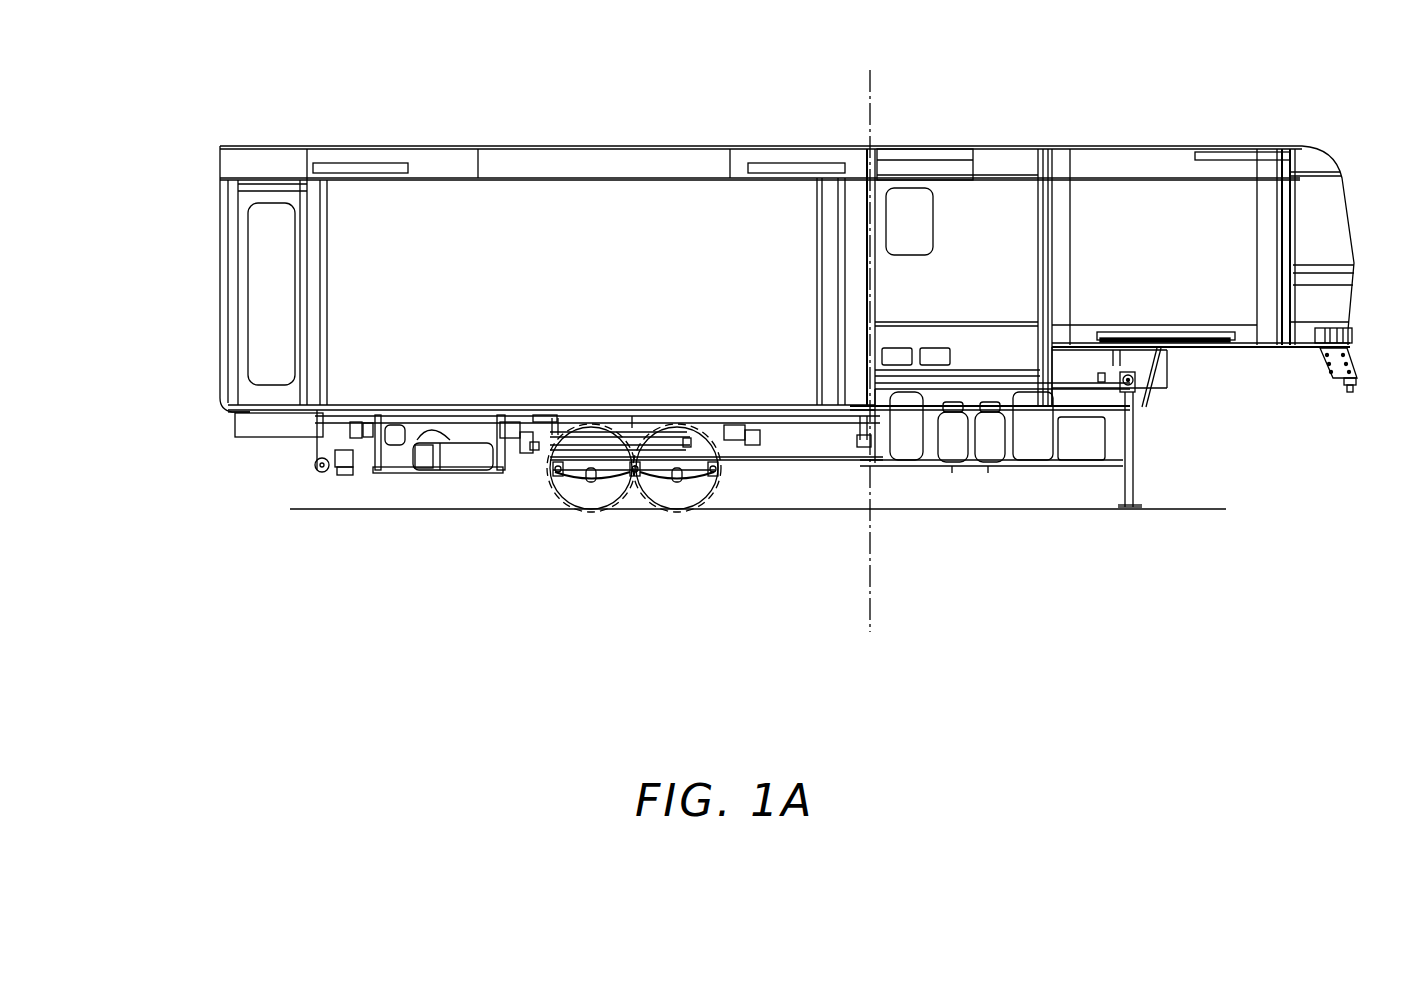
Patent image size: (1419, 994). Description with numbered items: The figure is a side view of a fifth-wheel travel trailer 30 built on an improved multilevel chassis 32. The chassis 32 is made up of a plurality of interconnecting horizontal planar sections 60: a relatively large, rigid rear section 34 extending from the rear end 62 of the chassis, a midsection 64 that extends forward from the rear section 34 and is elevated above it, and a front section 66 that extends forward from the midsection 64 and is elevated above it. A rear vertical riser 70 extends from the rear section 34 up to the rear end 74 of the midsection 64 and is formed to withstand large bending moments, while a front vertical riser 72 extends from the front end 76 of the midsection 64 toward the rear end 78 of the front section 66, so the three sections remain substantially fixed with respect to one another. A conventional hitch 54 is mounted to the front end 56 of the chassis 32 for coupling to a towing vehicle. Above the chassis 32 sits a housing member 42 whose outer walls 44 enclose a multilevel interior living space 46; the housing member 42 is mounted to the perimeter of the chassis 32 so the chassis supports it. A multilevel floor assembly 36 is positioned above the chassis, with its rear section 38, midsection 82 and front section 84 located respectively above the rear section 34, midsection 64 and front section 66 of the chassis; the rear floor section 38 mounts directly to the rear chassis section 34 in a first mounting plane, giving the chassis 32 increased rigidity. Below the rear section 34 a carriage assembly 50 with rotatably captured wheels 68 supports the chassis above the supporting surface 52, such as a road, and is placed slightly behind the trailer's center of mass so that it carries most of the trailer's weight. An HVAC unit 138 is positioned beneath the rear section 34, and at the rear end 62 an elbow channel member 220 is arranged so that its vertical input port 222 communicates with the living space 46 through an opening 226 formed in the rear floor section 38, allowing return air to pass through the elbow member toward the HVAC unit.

The fifth-wheel travel trailer 30 is at (1103, 595).
The chassis 32 is at (785, 427).
The rear section of the chassis 34 is at (466, 450).
The floor assembly 36 is at (515, 340).
The rear section of the floor assembly 38 is at (540, 415).
The housing member 42 is at (253, 470).
The outer walls 44 is at (220, 215).
The interior living space 46 is at (582, 295).
The carriage assembly 50 is at (597, 537).
The supporting surface 52 is at (1010, 510).
The hitch 54 is at (1333, 372).
The front end of the chassis 56 is at (1355, 343).
The horizontal planar sections 60 is at (678, 415).
The rear end of the chassis 62 is at (225, 428).
The midsection of the chassis 64 is at (993, 377).
The front section of the chassis 66 is at (1250, 340).
The wheels 68 is at (678, 493).
The rear vertical riser 70 is at (872, 462).
The front vertical riser 72 is at (1133, 452).
The rear end of the midsection 74 is at (868, 380).
The front end of the midsection 76 is at (1030, 377).
The rear end of the front section 78 is at (1065, 400).
The midsection of the floor assembly 82 is at (973, 362).
The front section of the floor assembly 84 is at (1150, 330).
The HVAC unit 138 is at (400, 485).
The elbow channel member 220 is at (222, 415).
The vertical input port 222 is at (220, 406).
The opening 226 is at (233, 385).